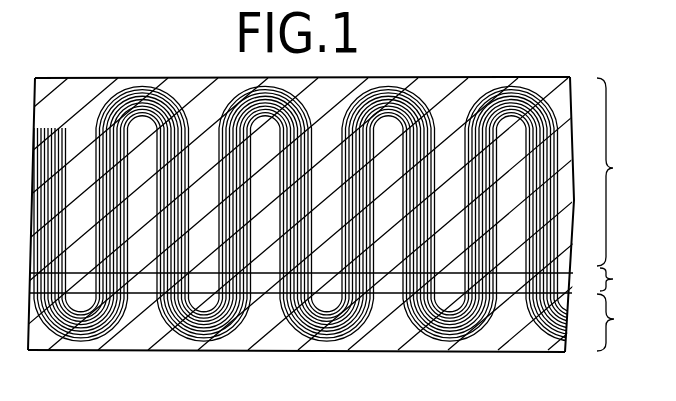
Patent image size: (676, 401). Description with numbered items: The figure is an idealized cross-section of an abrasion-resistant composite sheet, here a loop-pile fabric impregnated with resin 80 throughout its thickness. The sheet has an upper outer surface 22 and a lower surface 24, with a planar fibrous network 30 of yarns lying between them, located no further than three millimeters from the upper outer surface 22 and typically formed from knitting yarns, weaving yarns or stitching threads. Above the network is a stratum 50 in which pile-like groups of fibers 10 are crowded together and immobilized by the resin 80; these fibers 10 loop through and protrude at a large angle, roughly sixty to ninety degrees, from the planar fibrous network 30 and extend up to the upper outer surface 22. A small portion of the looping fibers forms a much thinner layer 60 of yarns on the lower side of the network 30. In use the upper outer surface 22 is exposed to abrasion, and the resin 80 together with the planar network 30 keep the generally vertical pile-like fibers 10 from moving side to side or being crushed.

The pile-like groups of fibers 10 is at (128, 97).
The resin 80 is at (82, 100).
The upper outer surface 22 is at (435, 78).
The lower surface 24 is at (398, 353).
The stratum 50 is at (338, 214).
The planar fibrous network 30 is at (338, 214).
The thinner layer of yarns 60 is at (338, 214).